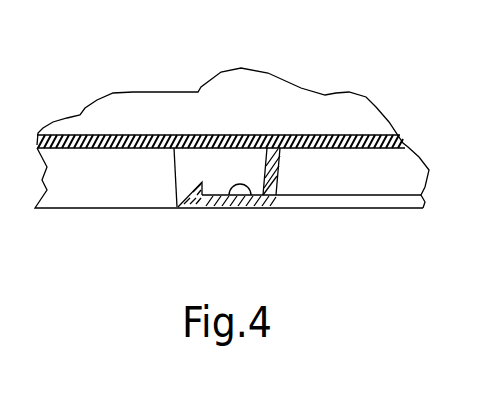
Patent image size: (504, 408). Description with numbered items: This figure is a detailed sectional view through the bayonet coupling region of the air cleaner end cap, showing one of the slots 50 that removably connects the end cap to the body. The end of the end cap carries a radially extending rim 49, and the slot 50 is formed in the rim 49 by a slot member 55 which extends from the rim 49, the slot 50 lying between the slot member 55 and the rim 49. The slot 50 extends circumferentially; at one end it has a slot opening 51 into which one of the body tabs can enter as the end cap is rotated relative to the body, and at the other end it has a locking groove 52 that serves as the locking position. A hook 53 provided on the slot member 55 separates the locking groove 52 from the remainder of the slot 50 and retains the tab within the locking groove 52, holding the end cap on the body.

The rim 49 is at (388, 122).
The slot 50 is at (112, 209).
The slot opening 51 is at (175, 175).
The locking groove 52 is at (228, 208).
The hook 53 is at (200, 208).
The slot member 55 is at (252, 208).